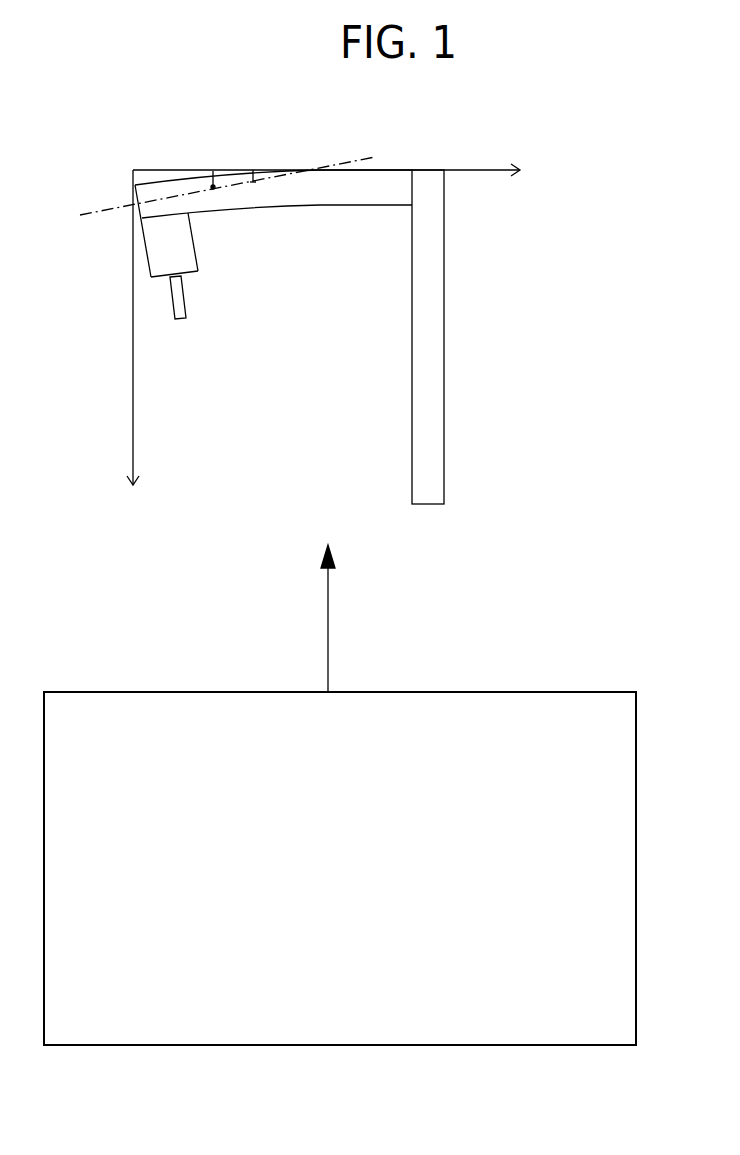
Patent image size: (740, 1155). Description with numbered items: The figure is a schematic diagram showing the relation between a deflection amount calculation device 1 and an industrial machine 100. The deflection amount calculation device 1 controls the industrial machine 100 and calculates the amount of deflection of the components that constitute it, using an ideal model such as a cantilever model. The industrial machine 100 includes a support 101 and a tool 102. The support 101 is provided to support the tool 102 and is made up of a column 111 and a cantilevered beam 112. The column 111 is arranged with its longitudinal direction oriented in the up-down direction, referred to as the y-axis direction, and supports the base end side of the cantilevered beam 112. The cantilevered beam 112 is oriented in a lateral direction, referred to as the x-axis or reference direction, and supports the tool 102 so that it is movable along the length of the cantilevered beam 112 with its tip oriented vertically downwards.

The deflection amount calculation device 1 is at (340, 795).
The industrial machine 100 is at (576, 119).
The support 101 is at (380, 337).
The tool 102 is at (187, 255).
The column 111 is at (550, 272).
The cantilevered beam 112 is at (400, 195).